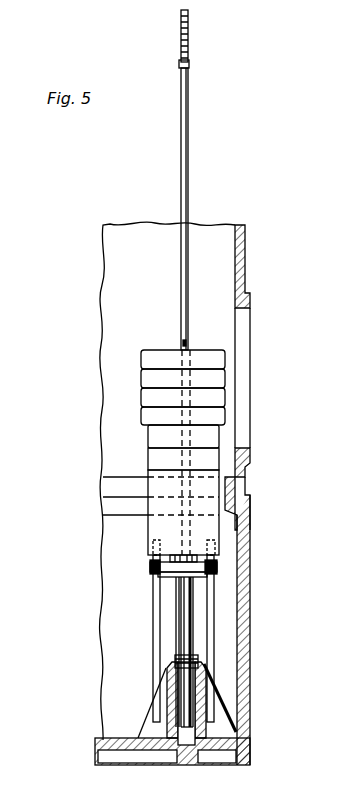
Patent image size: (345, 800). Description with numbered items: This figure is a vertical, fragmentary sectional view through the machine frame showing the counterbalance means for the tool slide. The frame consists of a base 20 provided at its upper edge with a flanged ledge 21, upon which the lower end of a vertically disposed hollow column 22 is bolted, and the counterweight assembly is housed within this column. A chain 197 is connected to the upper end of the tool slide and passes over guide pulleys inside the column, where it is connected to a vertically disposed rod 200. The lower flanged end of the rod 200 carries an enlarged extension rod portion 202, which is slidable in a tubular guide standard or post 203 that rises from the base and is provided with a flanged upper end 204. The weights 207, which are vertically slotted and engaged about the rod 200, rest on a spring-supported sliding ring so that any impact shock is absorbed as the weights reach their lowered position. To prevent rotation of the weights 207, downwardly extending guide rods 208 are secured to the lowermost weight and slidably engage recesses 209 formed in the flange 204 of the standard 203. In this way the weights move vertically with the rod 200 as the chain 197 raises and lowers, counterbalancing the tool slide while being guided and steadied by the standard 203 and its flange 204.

The chain 197 is at (188, 40).
The rod 200 is at (188, 200).
The hollow column 22 is at (245, 268).
The weights 207 is at (213, 380).
The flanged ledge 21 is at (250, 503).
The enlarged extension rod portion 202 is at (156, 556).
The flanged upper end 204 is at (200, 562).
The recesses 209 is at (153, 567).
The guide rods 208 is at (157, 630).
The tubular guide standard 203 is at (188, 630).
The base 20 is at (251, 664).